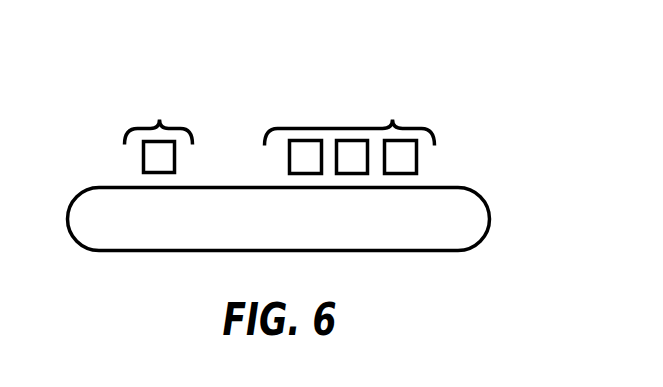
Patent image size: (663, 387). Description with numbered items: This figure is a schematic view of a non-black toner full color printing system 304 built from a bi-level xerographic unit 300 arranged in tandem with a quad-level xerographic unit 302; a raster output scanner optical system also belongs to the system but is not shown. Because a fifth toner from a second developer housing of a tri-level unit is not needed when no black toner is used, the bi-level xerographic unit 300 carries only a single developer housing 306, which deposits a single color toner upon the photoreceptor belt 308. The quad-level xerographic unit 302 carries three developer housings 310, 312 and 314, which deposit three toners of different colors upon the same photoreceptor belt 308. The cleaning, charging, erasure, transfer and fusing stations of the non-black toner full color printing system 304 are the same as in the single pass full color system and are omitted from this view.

The bi-level xerographic unit 300 is at (159, 119).
The quad-level xerographic unit 302 is at (350, 120).
The non-black toner full color printing system 304 is at (453, 60).
The developer housing 306 is at (155, 159).
The photoreceptor belt 308 is at (485, 203).
The developer housing 310 is at (302, 153).
The developer housing 312 is at (357, 150).
The developer housing 314 is at (395, 160).